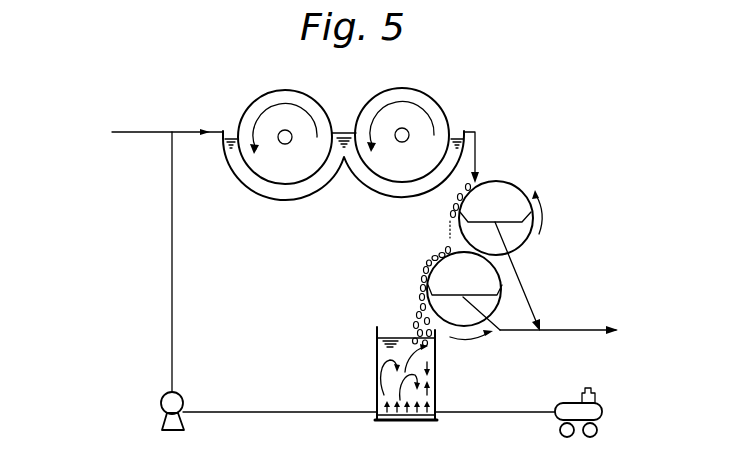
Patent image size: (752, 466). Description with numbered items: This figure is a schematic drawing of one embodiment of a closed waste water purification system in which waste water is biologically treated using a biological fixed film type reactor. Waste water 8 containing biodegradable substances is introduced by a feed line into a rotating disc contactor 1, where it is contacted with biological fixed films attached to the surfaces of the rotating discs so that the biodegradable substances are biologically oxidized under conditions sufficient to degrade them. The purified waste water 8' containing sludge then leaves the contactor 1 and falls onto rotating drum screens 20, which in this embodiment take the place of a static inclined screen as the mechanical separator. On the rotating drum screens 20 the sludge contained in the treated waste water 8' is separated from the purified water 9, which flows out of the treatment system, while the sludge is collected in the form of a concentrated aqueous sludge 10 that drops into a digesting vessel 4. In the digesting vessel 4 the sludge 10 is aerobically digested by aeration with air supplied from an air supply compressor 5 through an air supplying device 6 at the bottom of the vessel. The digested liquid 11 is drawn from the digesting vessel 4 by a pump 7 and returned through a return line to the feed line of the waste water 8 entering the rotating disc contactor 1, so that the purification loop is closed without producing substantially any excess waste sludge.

The rotating disc contactor 1 is at (437, 101).
The digesting vessel 4 is at (436, 377).
The air supply compressor 5 is at (603, 409).
The air supplying device 6 is at (408, 421).
The pump 7 is at (161, 406).
The waste water 8 is at (155, 131).
The purified waste water containing sludge 8' is at (494, 153).
The purified water 9 is at (568, 332).
The aqueous concentrated sludge 10 is at (428, 288).
The digested liquid 11 is at (172, 294).
The rotating drum screens 20 is at (513, 183).